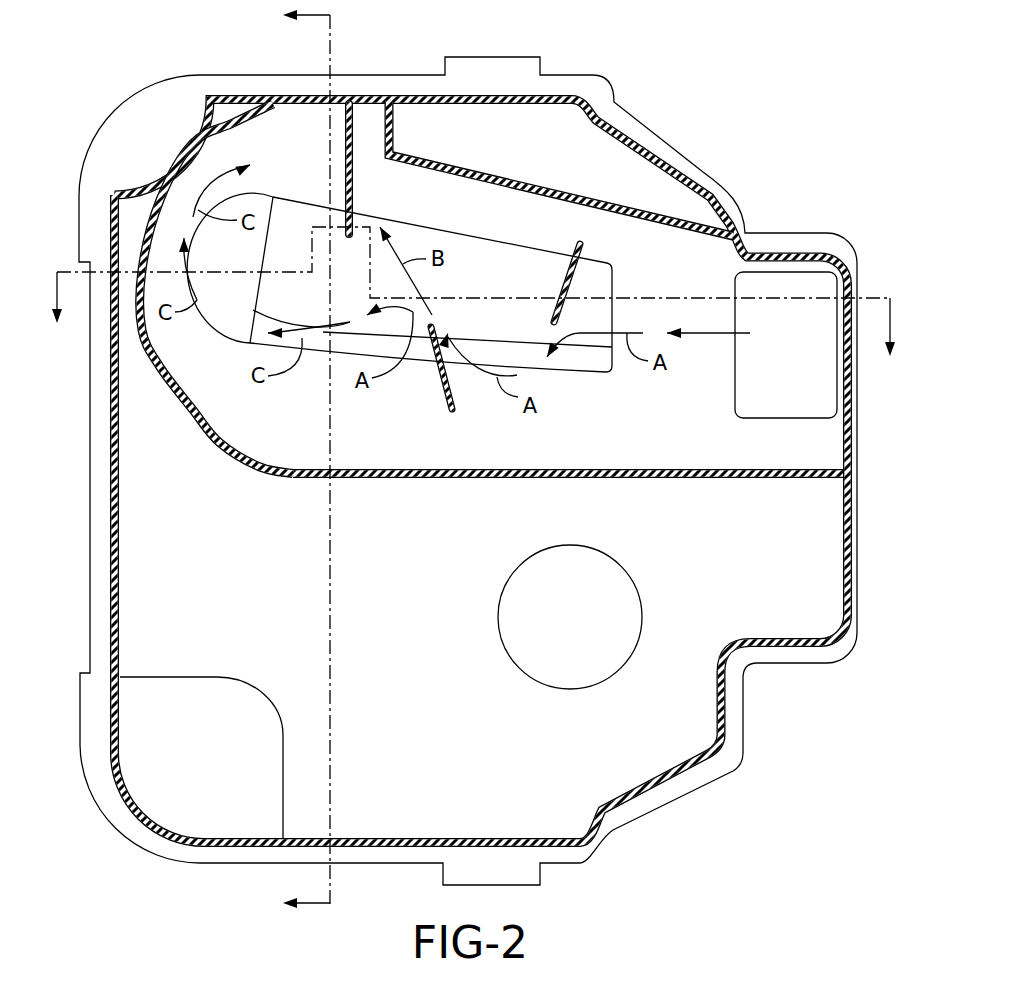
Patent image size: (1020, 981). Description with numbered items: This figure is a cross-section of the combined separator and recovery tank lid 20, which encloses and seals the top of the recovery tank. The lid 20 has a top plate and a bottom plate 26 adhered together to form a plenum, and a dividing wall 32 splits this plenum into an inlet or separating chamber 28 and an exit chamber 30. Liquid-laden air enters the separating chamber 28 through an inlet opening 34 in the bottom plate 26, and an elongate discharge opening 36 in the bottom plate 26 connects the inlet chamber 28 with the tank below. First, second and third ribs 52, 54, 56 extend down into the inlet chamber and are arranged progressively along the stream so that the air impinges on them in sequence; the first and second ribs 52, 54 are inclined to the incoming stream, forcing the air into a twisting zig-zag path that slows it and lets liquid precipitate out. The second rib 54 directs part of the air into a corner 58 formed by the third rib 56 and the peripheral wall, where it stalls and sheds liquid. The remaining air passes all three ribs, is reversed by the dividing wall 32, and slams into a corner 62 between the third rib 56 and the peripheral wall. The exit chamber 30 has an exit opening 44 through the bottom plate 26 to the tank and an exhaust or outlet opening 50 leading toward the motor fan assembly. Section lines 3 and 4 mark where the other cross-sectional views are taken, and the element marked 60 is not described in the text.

The combined separator and recovery tank lid 20 is at (685, 120).
The bottom plate 26 is at (406, 685).
The inlet or separating chamber 28 is at (683, 257).
The exit chamber 30 is at (677, 680).
The dividing wall 32 is at (268, 470).
The inlet opening 34 is at (768, 393).
The elongate discharge opening 36 is at (485, 272).
The exit opening 44 is at (523, 600).
The exhaust or outlet opening 50 is at (193, 702).
The first rib 52 is at (575, 248).
The second rib 54 is at (453, 410).
The third rib 56 is at (353, 182).
The corner 58 is at (375, 113).
The upper housing wall 60 is at (248, 95).
The corner 62 is at (320, 117).
The section line 3- 3 is at (473, 305).
The section line 4- 4 is at (292, 461).